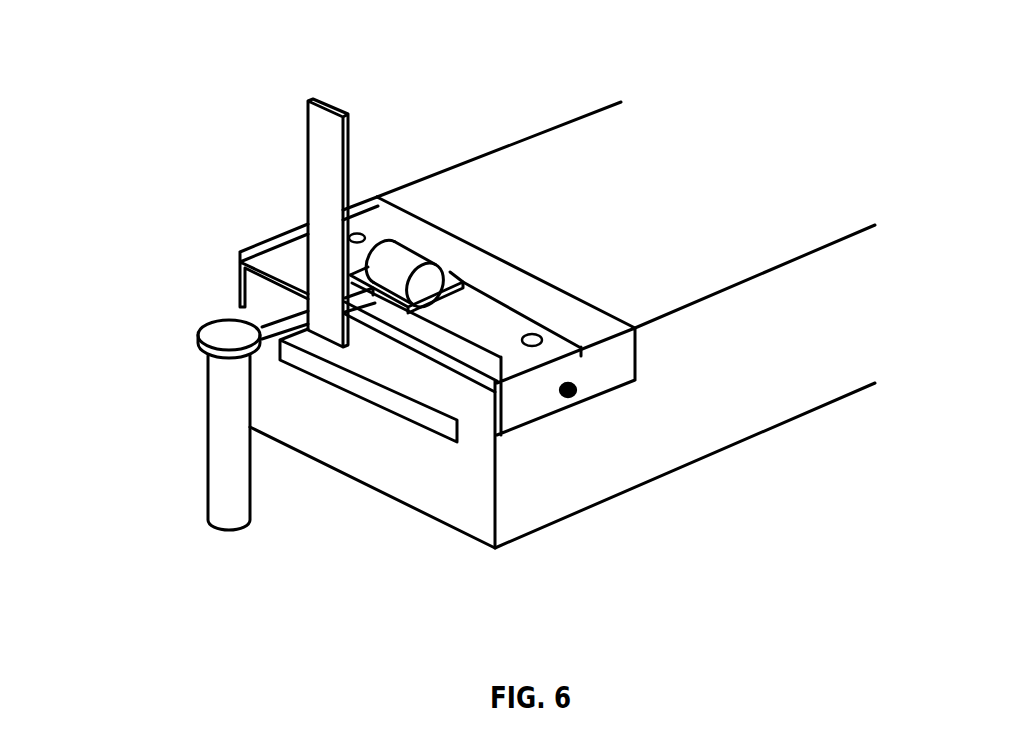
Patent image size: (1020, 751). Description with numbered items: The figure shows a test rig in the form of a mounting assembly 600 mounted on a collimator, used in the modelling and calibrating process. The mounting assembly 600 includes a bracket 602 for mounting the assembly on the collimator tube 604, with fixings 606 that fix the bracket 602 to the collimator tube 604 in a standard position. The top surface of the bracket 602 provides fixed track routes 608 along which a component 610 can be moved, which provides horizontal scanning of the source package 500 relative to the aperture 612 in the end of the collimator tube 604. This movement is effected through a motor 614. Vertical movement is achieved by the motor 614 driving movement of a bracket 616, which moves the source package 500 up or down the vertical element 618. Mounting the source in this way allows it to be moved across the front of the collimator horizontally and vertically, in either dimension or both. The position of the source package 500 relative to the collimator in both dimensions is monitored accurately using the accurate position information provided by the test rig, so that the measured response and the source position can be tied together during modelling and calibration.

The source package 500 is at (227, 477).
The mounting assembly 600 is at (204, 126).
The bracket 602 is at (515, 295).
The collimator tube 604 is at (672, 445).
The fixings 606 is at (574, 388).
The fixed track routes 608 is at (295, 250).
The component 610 is at (458, 276).
The aperture 612 is at (392, 402).
The motor 614 is at (407, 252).
The bracket 616 is at (268, 322).
The vertical element 618 is at (327, 123).